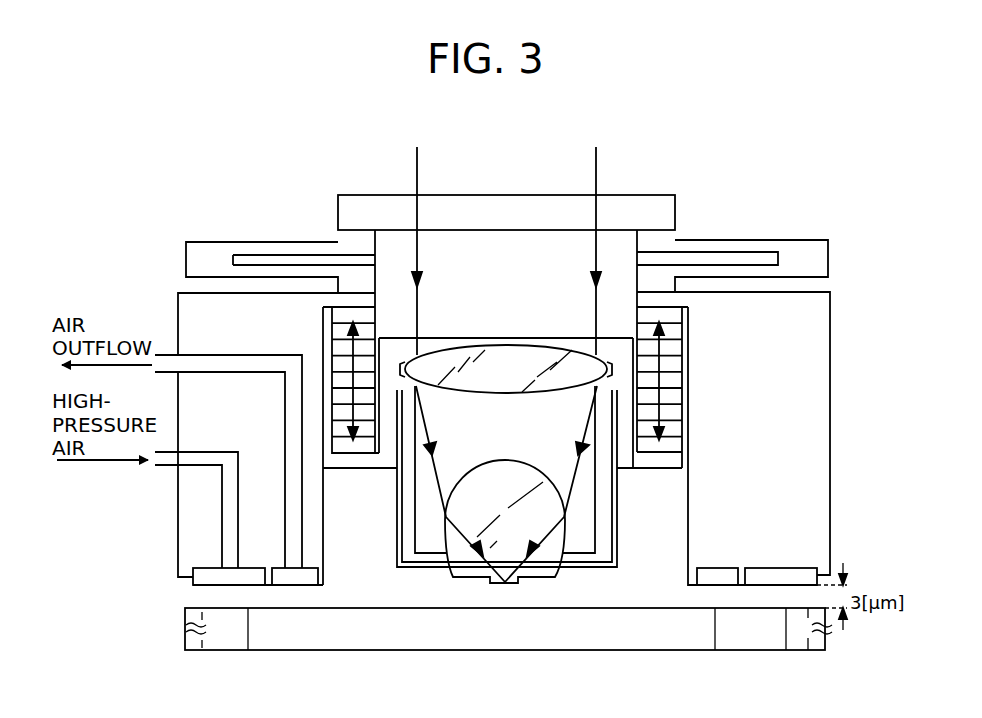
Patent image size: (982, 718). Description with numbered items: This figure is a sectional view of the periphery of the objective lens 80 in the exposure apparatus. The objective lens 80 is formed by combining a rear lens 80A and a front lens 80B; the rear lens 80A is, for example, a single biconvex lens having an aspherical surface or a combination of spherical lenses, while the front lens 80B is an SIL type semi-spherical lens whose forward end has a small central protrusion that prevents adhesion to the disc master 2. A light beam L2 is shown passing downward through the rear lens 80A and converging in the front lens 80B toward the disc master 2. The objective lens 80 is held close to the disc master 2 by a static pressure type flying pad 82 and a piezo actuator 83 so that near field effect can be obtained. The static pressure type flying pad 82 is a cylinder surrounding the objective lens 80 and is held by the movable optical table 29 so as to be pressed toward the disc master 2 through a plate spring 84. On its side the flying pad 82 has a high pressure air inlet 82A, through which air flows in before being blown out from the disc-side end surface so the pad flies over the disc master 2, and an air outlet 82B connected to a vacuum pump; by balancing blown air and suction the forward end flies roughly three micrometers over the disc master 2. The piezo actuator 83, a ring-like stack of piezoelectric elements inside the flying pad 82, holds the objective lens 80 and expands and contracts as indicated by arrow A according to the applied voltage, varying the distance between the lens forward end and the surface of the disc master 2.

The laser beam L2 is at (597, 168).
The movable optical table 29 is at (667, 211).
The plate spring 84 is at (812, 258).
The static pressure type flying pad 82 is at (822, 390).
The high pressure air inlet 82A is at (168, 457).
The air outlet 82B is at (168, 362).
The piezo actuator 83 is at (335, 332).
The arrow A is at (658, 380).
The objective lens 80 is at (590, 520).
The rear lens 80A is at (510, 356).
The front lens 80B is at (510, 487).
The disc master 2 is at (583, 640).